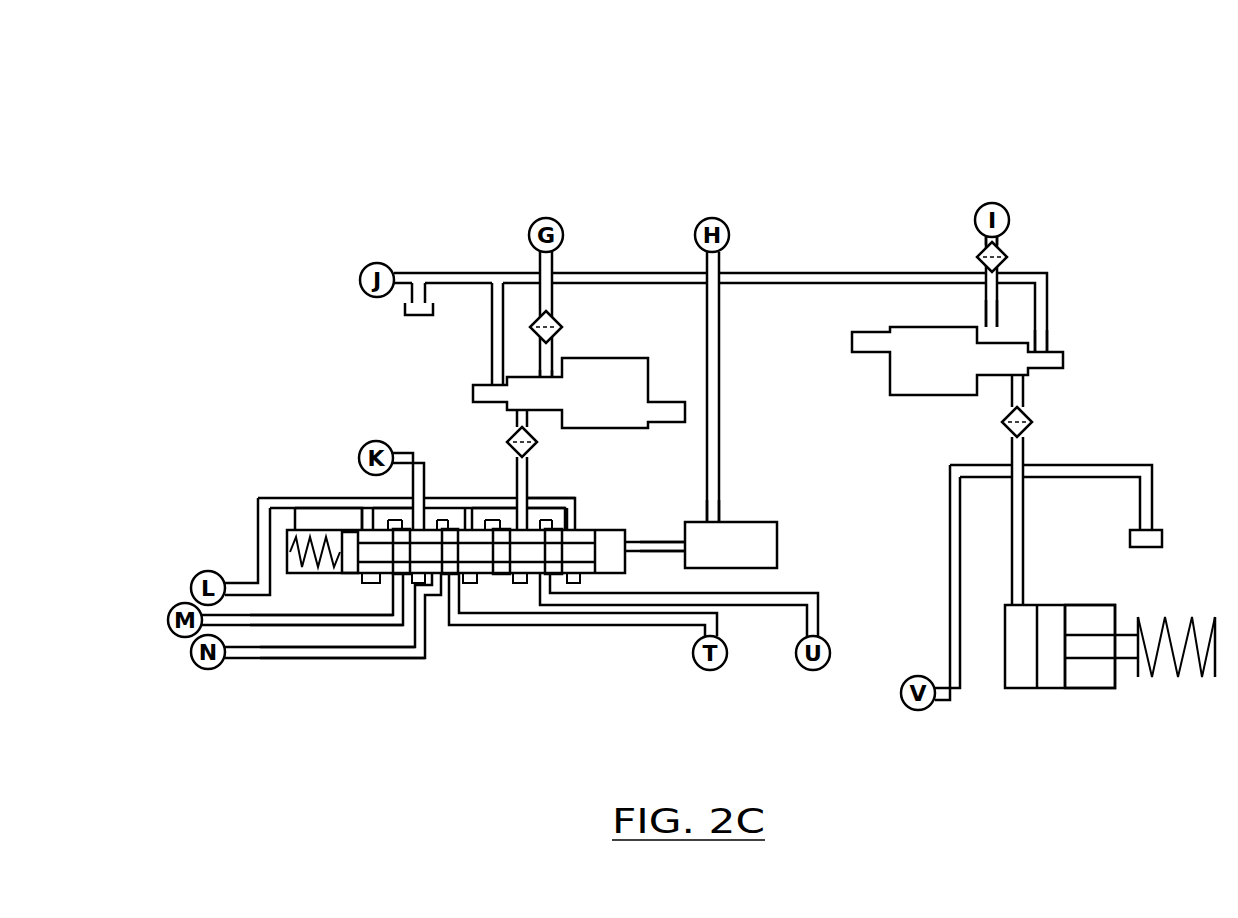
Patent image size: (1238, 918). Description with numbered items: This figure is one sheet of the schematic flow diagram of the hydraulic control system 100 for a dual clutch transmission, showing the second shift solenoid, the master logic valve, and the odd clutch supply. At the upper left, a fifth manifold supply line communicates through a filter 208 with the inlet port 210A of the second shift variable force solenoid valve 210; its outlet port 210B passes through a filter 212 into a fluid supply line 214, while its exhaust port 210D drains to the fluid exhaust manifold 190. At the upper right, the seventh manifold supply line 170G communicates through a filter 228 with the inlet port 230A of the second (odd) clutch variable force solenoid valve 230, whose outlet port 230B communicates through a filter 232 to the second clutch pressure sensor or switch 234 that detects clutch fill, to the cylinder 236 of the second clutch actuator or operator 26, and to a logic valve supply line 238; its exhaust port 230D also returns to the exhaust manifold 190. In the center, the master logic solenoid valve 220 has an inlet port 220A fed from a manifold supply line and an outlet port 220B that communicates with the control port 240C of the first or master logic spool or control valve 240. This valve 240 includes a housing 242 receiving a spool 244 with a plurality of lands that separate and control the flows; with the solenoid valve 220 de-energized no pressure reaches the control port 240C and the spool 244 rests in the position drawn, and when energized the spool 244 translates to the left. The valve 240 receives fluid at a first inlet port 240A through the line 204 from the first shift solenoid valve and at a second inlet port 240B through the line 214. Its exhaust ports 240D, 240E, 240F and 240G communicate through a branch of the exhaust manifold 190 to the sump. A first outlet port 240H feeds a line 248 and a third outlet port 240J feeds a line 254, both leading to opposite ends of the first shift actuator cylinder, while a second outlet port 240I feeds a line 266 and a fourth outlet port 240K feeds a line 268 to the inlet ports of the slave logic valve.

The hydraulic control system 100 is at (1103, 124).
The second clutch actuator or operator 26 is at (1093, 718).
The seventh manifold supply line 170G is at (982, 248).
The fluid exhaust manifold 190 is at (241, 581).
The fluid supply line 204 is at (426, 466).
The filter 208 is at (540, 320).
The second shift variable force solenoid valve 210 is at (443, 375).
The inlet port 210A is at (548, 376).
The outlet port 210B is at (528, 425).
The exhaust port 210D is at (497, 383).
The filter 212 is at (511, 434).
The fluid supply line 214 is at (529, 470).
The master logic solenoid valve 220 is at (791, 542).
The inlet port 220A is at (718, 520).
The outlet port 220B is at (687, 547).
The filter 228 is at (1003, 246).
The second clutch variable force solenoid valve 230 is at (866, 380).
The inlet port 230A is at (986, 326).
The outlet port 230B is at (1026, 385).
The exhaust port 230D is at (1049, 354).
The filter 232 is at (1008, 433).
The second clutch pressure sensor or switch 234 is at (1163, 540).
The cylinder 236 is at (1080, 603).
The logic valve supply line 238 is at (948, 552).
The master logic spool or control valve 240 is at (177, 485).
The first inlet port 240A is at (398, 452).
The second inlet port 240B is at (541, 497).
The control port 240C is at (630, 548).
The exhaust port 240D is at (292, 522).
The exhaust port 240E is at (367, 517).
The exhaust port 240F is at (470, 525).
The exhaust port 240G is at (573, 523).
The first outlet port 240H is at (393, 575).
The second outlet port 240I is at (445, 577).
The third outlet port 240J is at (493, 575).
The fourth outlet port 240K is at (542, 575).
The housing 242 is at (337, 573).
The spool 244 is at (285, 545).
The line 248 is at (250, 628).
The line 254 is at (285, 660).
The line 266 is at (483, 626).
The line 268 is at (617, 607).